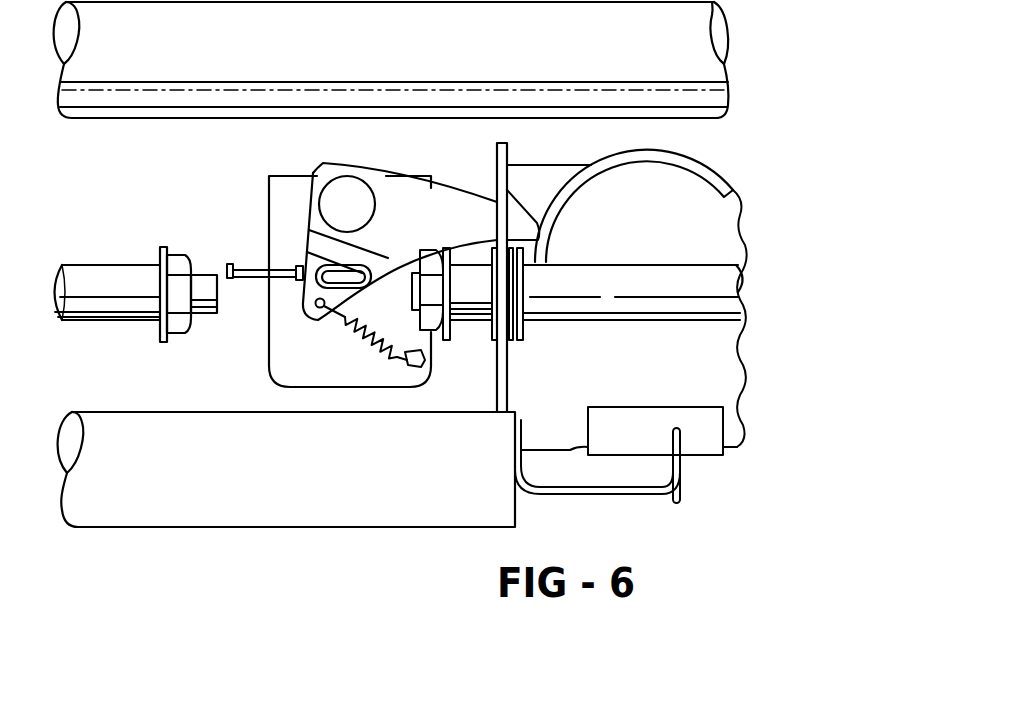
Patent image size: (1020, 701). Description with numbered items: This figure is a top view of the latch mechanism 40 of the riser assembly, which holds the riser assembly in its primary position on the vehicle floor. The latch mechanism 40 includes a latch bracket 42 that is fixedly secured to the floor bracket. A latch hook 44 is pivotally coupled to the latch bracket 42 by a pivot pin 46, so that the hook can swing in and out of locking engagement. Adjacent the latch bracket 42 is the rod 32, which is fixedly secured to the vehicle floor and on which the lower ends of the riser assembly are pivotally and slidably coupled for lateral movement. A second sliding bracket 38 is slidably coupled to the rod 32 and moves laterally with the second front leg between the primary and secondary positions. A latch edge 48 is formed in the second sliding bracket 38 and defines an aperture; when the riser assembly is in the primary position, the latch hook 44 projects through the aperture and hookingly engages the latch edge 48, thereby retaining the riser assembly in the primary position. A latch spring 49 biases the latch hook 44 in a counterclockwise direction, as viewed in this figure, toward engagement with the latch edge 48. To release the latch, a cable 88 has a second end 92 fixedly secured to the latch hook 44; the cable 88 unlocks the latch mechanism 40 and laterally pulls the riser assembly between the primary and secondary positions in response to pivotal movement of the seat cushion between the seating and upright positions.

The rod 32 is at (696, 276).
The second sliding bracket 38 is at (547, 176).
The latch mechanism 40 is at (331, 258).
The latch bracket 42 is at (268, 192).
The latch hook 44 is at (396, 205).
The pivot pin 46 is at (352, 186).
The latch edge 48 is at (498, 200).
The latch spring 49 is at (360, 340).
The cable 88 is at (100, 268).
The second end 92 is at (248, 262).